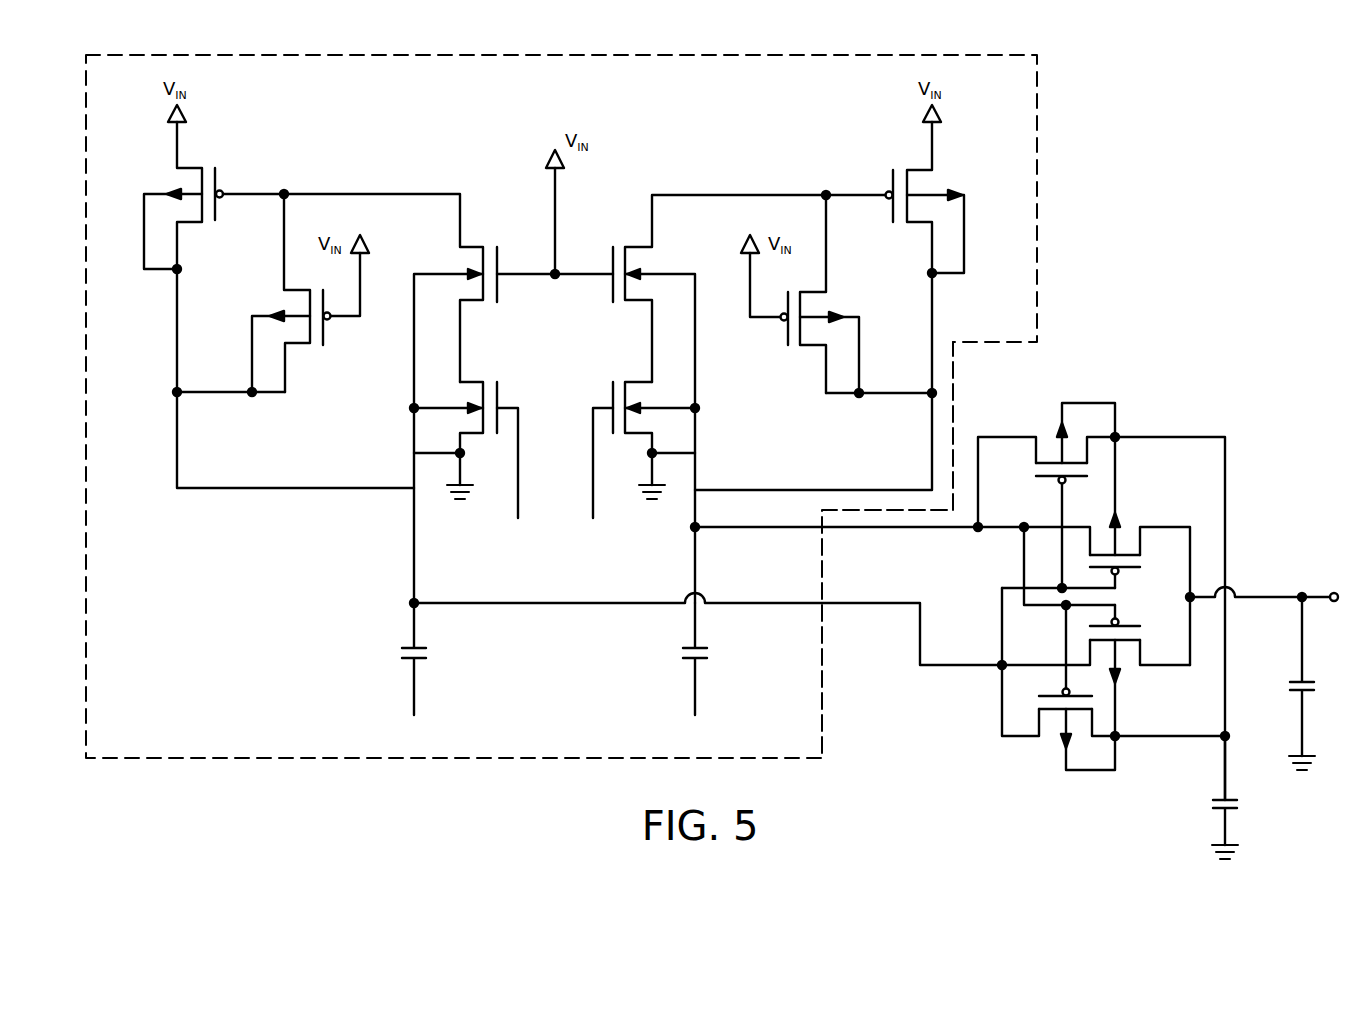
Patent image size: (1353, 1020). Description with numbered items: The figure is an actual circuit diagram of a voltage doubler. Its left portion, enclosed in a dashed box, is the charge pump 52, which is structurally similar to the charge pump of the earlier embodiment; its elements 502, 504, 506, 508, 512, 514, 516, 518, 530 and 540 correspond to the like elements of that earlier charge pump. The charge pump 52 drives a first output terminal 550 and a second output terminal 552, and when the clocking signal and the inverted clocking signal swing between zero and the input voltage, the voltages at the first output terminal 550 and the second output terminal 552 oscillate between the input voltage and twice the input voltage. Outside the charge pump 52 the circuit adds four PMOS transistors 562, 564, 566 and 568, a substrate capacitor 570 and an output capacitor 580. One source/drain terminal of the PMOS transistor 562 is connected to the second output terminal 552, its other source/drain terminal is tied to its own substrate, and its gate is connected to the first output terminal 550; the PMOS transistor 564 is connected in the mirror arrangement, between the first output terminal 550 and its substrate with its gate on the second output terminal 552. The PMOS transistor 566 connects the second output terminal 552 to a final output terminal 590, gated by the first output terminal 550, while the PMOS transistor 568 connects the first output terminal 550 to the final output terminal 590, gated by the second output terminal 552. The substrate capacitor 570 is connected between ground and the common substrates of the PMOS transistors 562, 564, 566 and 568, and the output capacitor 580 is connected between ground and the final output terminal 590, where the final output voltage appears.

The charge pump 52 is at (1037, 100).
The charge pump element 502 is at (210, 150).
The charge pump element 504 is at (313, 355).
The charge pump element 506 is at (899, 152).
The charge pump element 508 is at (797, 355).
The charge pump element 512 is at (486, 235).
The charge pump element 514 is at (490, 450).
The charge pump element 516 is at (624, 235).
The charge pump element 518 is at (622, 450).
The charge pump element 530 is at (436, 651).
The charge pump element 540 is at (676, 653).
The first output terminal 550 is at (549, 606).
The second output terminal 552 is at (858, 528).
The PMOS transistor 562 is at (1030, 466).
The PMOS transistor 564 is at (1027, 704).
The PMOS transistor 566 is at (1128, 520).
The PMOS transistor 568 is at (1129, 675).
The substrate capacitor 570 is at (1204, 803).
The output capacitor 580 is at (1280, 688).
The final output terminal 590 is at (1311, 580).